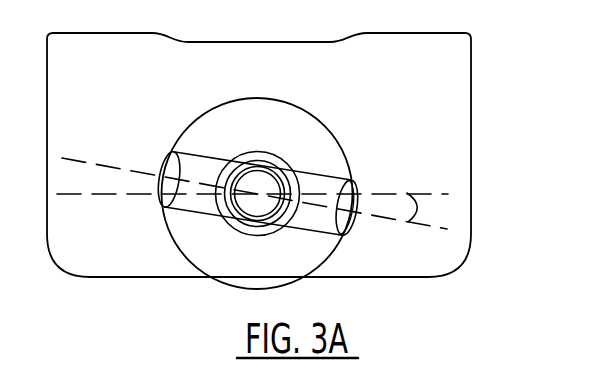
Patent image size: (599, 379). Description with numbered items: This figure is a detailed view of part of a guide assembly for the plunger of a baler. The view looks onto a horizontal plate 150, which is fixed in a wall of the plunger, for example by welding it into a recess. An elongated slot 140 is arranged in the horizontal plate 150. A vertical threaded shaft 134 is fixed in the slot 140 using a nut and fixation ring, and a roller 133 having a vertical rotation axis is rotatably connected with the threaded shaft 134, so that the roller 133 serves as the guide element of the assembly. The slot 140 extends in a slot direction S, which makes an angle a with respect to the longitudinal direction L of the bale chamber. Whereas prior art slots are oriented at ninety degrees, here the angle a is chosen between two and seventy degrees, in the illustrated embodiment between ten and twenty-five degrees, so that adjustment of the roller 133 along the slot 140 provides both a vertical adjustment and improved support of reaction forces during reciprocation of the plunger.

The horizontal plate 150 is at (450, 73).
The roller 133 is at (179, 235).
The slot 140 is at (355, 179).
The threaded shaft 134 is at (260, 180).
The longitudinal direction L is at (427, 190).
The slot direction S is at (402, 220).
The angle a is at (422, 207).